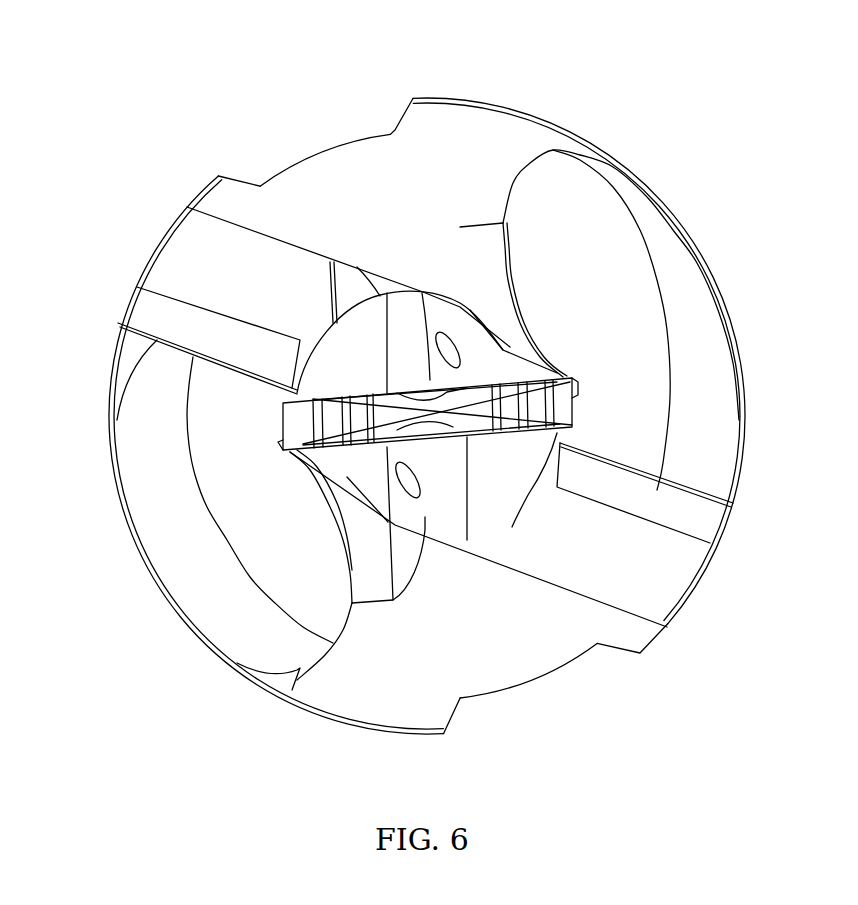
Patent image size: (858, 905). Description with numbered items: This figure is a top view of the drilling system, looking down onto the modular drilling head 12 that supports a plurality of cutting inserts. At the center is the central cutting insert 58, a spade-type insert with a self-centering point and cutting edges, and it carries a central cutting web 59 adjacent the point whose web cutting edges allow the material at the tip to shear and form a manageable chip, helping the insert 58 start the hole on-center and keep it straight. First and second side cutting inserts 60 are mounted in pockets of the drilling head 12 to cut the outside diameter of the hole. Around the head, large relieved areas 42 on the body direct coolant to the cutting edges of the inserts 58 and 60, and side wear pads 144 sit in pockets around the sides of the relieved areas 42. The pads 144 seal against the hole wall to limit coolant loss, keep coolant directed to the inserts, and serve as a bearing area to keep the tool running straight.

The drilling head 12 is at (655, 580).
The relieved area 42 is at (319, 151).
The central cutting insert 58 is at (563, 377).
The central cutting web 59 is at (436, 430).
The side cutting insert 60 is at (172, 326).
The side wear pad 144 is at (481, 100).